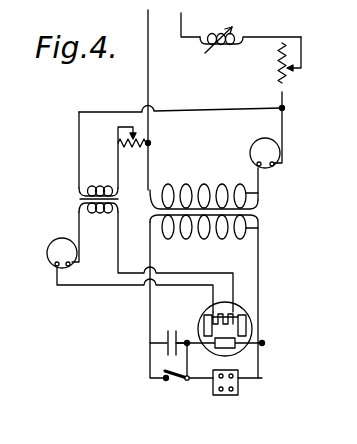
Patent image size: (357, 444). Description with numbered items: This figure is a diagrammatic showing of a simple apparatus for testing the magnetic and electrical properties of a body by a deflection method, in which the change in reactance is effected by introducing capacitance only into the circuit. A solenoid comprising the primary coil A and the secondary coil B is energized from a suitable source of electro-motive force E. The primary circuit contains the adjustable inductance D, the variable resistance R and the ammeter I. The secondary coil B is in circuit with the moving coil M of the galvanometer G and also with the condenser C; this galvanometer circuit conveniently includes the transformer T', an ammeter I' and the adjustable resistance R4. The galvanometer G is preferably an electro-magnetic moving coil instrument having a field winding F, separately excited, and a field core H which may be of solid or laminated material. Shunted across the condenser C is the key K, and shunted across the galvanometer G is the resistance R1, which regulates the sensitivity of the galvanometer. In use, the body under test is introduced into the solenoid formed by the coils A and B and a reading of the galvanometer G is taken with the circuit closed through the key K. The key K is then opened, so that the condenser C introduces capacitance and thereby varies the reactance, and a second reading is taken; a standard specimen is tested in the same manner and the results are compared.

The source of electro-motive force E is at (174, 100).
The adjustable inductance D is at (250, 28).
The variable resistance R is at (290, 85).
The ammeter I is at (280, 153).
The adjustable resistance R4 is at (130, 147).
The primary coil A is at (258, 193).
The secondary coil B is at (258, 228).
The transformer T' is at (86, 199).
The ammeter I' is at (50, 253).
The field winding F is at (212, 309).
The field core H is at (241, 317).
The galvanometer G is at (247, 326).
The moving coil M is at (226, 349).
The condenser C is at (165, 336).
The key K is at (180, 381).
The resistance R1 is at (238, 389).